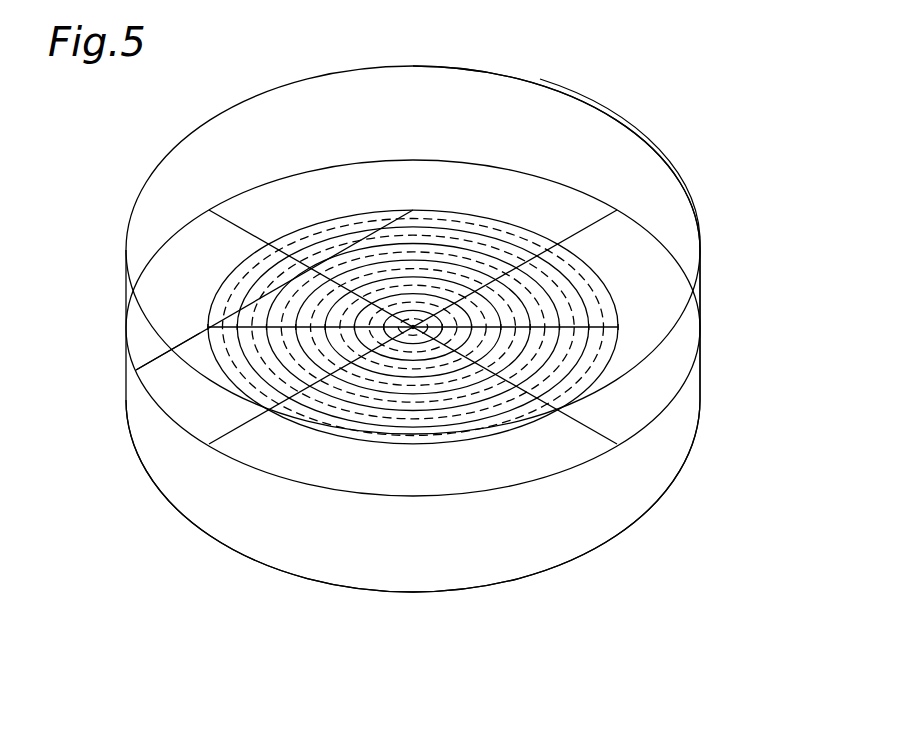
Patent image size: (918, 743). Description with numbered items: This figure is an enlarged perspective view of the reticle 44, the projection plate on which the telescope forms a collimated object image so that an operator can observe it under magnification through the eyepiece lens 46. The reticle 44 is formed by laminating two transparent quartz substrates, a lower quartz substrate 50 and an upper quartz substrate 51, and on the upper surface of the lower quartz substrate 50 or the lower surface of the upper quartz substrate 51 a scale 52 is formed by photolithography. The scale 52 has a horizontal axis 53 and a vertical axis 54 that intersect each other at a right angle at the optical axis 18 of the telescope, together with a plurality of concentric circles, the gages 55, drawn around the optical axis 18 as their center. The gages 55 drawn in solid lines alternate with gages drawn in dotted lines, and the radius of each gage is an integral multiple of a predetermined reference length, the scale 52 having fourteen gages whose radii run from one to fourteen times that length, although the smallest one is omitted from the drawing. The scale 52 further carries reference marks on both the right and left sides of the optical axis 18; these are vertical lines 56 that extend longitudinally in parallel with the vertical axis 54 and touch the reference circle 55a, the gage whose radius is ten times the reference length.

The optical axis 18 is at (411, 330).
The reticle 44 is at (148, 167).
The eyepiece lens 46 is at (653, 142).
The lower quartz substrate 50 is at (702, 412).
The upper quartz substrate 51 is at (695, 180).
The scale 52 is at (319, 429).
The horizontal axis 53 is at (596, 437).
The vertical axis 54 is at (593, 222).
The gages 55 is at (238, 311).
The reference circle 55a is at (136, 370).
The vertical lines 56 is at (390, 213).